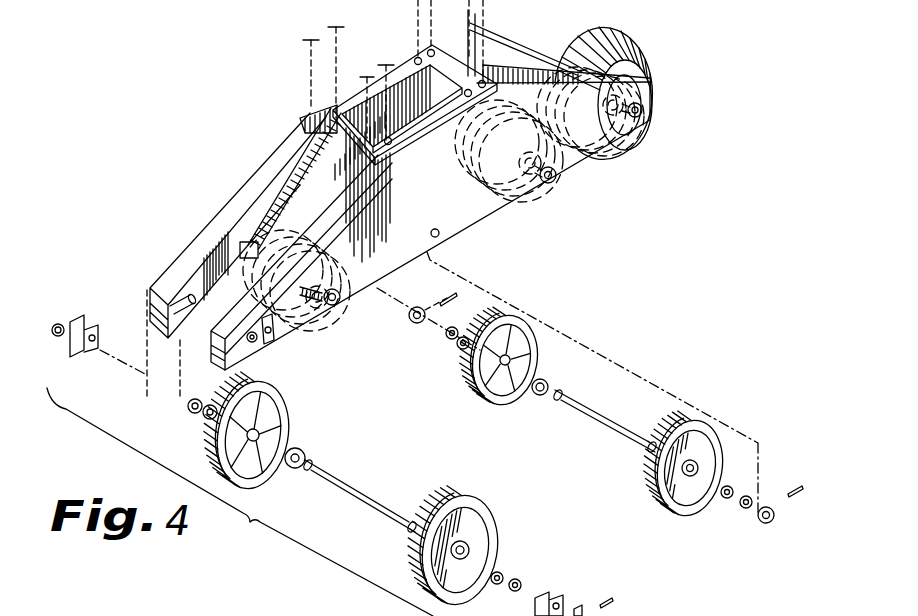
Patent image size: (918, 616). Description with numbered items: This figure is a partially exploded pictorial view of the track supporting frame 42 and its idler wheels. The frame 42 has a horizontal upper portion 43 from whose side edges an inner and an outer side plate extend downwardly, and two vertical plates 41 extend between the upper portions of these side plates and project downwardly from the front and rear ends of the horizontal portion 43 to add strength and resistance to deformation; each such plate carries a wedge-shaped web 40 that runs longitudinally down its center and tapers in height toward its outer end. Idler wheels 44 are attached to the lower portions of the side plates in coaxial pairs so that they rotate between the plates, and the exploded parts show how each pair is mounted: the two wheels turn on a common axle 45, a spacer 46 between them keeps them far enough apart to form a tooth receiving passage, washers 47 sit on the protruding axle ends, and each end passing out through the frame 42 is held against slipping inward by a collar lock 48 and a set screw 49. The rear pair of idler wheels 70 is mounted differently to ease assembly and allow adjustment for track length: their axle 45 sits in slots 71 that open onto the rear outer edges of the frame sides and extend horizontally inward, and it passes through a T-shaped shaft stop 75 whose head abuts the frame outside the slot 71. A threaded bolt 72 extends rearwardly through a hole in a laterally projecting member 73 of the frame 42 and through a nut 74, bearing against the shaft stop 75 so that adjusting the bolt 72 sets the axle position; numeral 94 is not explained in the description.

The wedge-shaped web 40 is at (310, 140).
The vertical plates 41 is at (434, 80).
The track supporting frame 42 is at (256, 171).
The horizontal upper portion 43 is at (405, 66).
The idler wheels 44 is at (550, 316).
The axle 45 is at (378, 488).
The spacer 46 is at (312, 446).
The washers 47 is at (530, 560).
The collar lock 48 is at (582, 600).
The set screw 49 is at (622, 593).
The rear pair of idler wheels 70 is at (196, 438).
The slots 71 is at (148, 340).
The threaded bolt 72 is at (320, 322).
The projecting member 73 is at (278, 342).
The nut 74 is at (262, 347).
The T-shaped shaft stop 75 is at (80, 366).
The wheel assembly set 94 is at (406, 502).